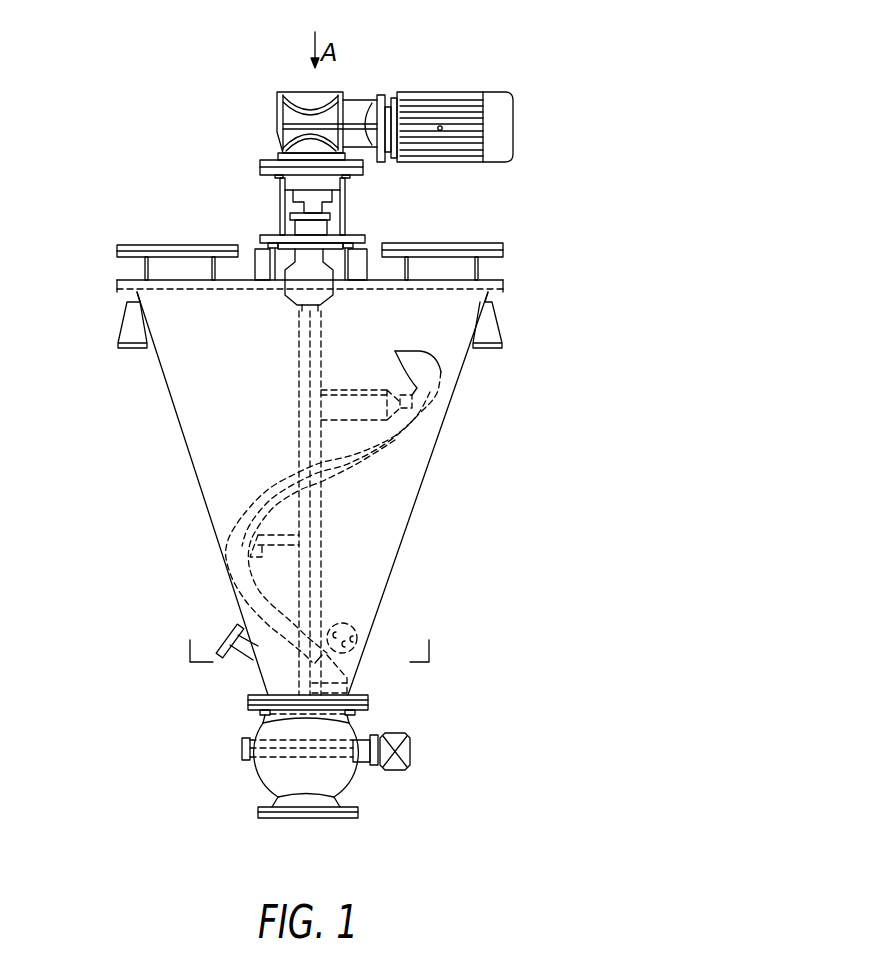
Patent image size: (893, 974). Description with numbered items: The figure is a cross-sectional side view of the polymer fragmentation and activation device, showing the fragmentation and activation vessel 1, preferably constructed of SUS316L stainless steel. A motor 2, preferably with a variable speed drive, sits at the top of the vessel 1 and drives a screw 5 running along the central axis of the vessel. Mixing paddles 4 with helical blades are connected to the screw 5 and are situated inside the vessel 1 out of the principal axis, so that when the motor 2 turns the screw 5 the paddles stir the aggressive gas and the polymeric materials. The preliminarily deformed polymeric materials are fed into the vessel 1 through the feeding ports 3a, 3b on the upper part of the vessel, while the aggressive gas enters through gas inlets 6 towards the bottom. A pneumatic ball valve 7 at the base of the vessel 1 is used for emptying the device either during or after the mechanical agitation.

The fragmentation and activation vessel 1 is at (133, 436).
The motor 2 is at (498, 128).
The feeding port 3a is at (162, 243).
The feeding port 3b is at (452, 243).
The mixing paddles 4 is at (440, 372).
The screw 5 is at (321, 505).
The gas inlets 6 is at (234, 628).
The pneumatic ball valve 7 is at (413, 750).